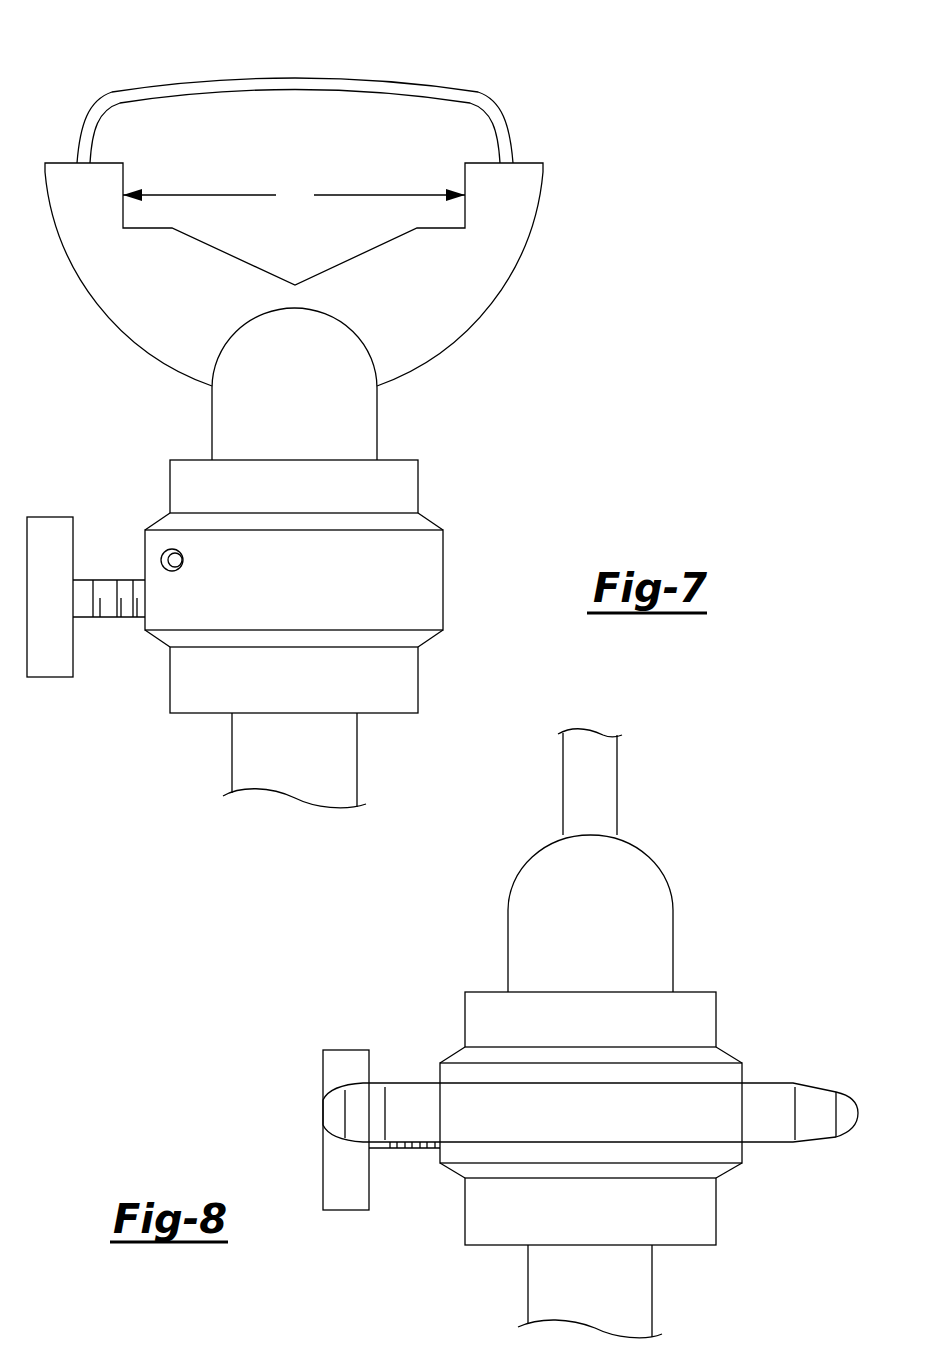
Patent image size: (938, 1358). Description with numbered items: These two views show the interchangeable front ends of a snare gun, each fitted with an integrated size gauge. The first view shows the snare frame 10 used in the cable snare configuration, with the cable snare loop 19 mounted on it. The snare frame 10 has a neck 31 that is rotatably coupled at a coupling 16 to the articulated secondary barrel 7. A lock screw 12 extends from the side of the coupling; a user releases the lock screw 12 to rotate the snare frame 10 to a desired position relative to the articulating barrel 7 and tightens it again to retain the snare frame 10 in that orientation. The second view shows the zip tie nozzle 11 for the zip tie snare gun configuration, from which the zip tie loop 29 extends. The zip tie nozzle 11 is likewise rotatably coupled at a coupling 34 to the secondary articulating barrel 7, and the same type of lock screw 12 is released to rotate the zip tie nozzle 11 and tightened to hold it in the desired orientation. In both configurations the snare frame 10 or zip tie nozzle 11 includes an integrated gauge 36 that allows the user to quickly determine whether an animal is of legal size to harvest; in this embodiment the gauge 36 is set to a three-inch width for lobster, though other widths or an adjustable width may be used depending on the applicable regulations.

In FIG. 7, the articulated secondary barrel assembly 7 is at (342, 775).
In FIG. 8, the articulated secondary barrel assembly 7 is at (652, 1292).
In FIG. 7, the snare frame 10 is at (523, 440).
In FIG. 8, the zip tie nozzle 11 is at (673, 927).
In FIG. 7, the lock screw 12 is at (52, 517).
In FIG. 8, the lock screw 12 is at (349, 1050).
In FIG. 7, the coupling 16 is at (445, 580).
In FIG. 7, the snare loop 19 is at (295, 76).
In FIG. 8, the zip tie loop 29 is at (617, 788).
In FIG. 7, the neck 31 is at (227, 422).
In FIG. 8, the coupling 34 is at (717, 1017).
In FIG. 7, the integrated gauge 36 is at (294, 195).
In FIG. 8, the integrated gauge 36 is at (773, 1147).